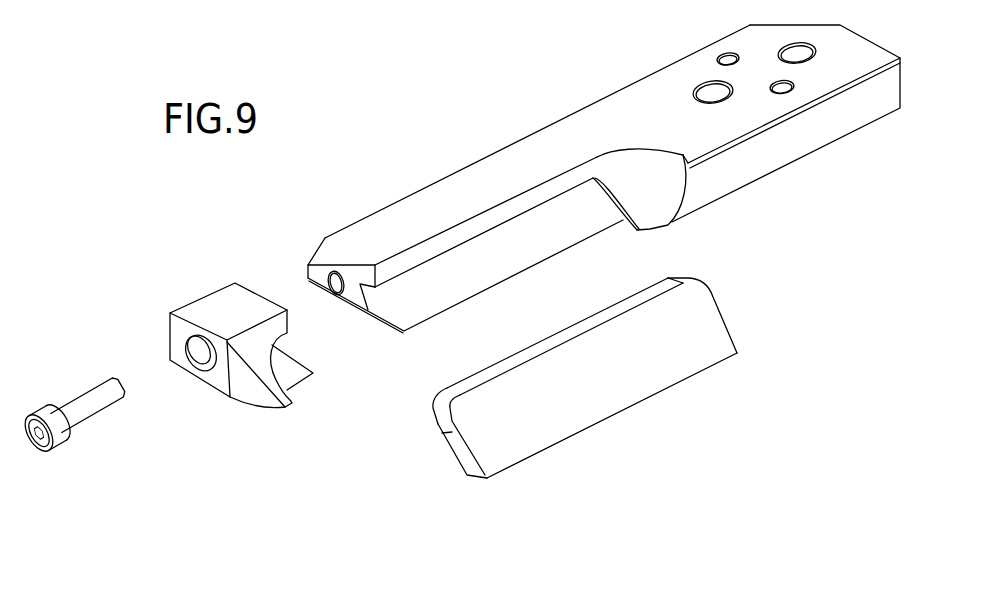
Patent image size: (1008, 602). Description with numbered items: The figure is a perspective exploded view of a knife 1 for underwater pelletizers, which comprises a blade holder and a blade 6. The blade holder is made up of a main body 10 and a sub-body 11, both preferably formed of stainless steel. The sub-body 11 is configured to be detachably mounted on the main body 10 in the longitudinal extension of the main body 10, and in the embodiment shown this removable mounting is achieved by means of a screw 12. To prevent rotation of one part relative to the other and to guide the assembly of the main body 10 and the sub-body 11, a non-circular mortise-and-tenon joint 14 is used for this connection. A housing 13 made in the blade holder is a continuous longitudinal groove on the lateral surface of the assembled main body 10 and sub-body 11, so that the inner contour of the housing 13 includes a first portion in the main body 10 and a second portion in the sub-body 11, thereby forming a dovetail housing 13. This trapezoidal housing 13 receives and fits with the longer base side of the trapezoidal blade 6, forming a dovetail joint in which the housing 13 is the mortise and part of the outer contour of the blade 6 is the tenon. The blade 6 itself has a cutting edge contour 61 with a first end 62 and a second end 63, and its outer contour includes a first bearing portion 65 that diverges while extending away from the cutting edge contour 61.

The knife 1 is at (383, 73).
The main body 10 is at (788, 140).
The sub-body 11 is at (218, 313).
The screw 12 is at (82, 417).
The housing 13 is at (480, 275).
The mortise-and-tenon joint 14 is at (328, 257).
The blade 6 is at (758, 295).
The cutting edge contour 61 is at (670, 388).
The first end 62 is at (487, 478).
The second end 63 is at (737, 353).
The first bearing portion 65 is at (462, 457).